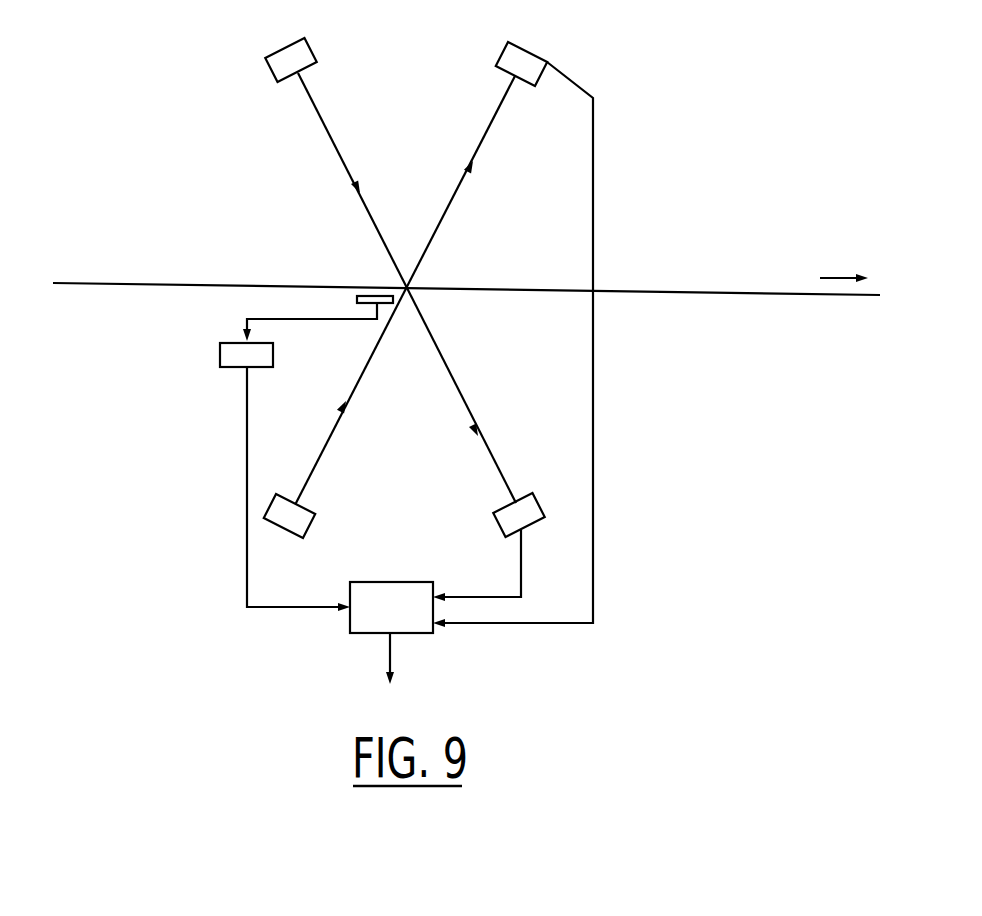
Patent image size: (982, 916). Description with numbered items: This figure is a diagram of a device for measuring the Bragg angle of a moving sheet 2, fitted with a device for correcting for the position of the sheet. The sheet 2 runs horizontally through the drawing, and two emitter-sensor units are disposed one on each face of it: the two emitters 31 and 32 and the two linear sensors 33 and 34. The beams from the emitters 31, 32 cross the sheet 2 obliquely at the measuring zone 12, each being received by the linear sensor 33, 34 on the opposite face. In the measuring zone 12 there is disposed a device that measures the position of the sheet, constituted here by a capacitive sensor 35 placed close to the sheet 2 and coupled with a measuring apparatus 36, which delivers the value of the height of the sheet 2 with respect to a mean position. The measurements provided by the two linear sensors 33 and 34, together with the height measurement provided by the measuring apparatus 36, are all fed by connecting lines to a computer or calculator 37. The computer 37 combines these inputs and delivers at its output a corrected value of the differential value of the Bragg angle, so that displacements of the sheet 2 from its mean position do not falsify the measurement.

The sheet 2 is at (93, 285).
The measuring zone 12 is at (375, 287).
The emitter 31 is at (306, 52).
The emitter 32 is at (308, 512).
The linear sensor 33 is at (529, 60).
The linear sensor 34 is at (527, 503).
The capacitive sensor 35 is at (358, 306).
The measuring apparatus 36 is at (224, 352).
The computer or calculator 37 is at (365, 626).